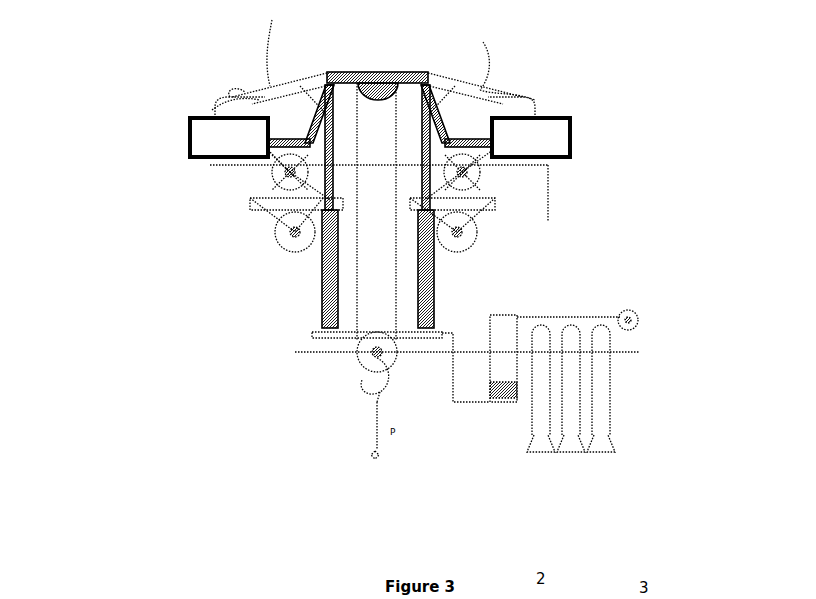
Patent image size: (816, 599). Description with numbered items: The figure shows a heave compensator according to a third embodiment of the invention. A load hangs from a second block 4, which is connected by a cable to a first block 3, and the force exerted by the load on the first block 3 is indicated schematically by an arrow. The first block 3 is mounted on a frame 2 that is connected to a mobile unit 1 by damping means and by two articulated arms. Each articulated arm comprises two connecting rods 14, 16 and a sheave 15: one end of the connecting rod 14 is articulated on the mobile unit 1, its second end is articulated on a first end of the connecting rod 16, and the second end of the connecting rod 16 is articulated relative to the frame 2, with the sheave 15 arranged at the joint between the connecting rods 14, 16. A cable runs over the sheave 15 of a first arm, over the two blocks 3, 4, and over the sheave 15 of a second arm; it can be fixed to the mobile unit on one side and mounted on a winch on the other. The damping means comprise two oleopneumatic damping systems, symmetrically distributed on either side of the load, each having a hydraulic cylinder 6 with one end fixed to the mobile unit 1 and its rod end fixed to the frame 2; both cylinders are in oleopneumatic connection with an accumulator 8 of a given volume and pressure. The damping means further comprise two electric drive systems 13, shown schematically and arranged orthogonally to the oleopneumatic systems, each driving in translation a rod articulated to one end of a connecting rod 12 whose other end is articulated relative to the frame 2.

The mobile unit 1 is at (492, 205).
The frame 2 is at (347, 70).
The first block 3 is at (377, 72).
The second block 4 is at (395, 353).
The hydraulic cylinder 6 is at (320, 302).
The accumulator 8 is at (560, 387).
The connecting rod 12 is at (501, 50).
The electric drive system 13 is at (552, 133).
The connecting rod 14 is at (270, 178).
The sheave 15 is at (226, 99).
The connecting rod 16 is at (270, 93).